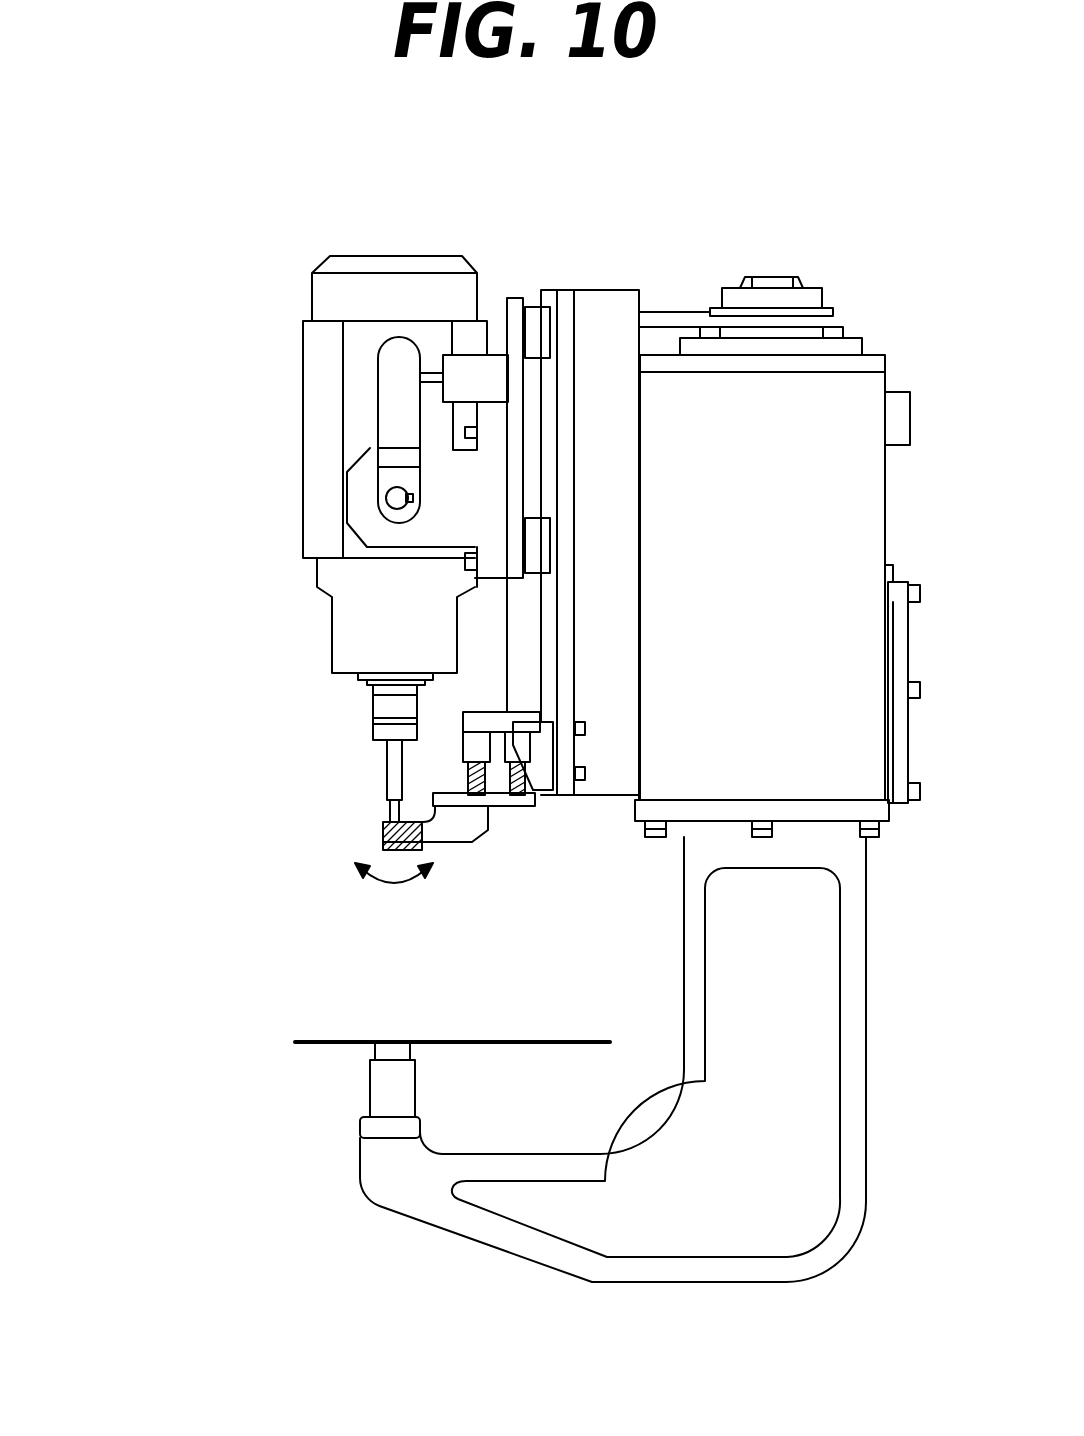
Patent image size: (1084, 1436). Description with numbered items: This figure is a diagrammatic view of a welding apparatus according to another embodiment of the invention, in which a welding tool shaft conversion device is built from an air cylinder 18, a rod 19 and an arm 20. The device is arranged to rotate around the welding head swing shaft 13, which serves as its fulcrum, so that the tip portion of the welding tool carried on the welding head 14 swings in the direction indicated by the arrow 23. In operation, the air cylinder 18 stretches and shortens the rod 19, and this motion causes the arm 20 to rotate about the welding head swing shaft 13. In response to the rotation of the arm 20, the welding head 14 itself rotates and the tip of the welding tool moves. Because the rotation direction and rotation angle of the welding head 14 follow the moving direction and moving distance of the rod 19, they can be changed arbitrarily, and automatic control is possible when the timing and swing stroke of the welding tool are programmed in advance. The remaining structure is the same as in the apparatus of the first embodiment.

The welding head swing shaft 13 is at (386, 499).
The welding head 14 is at (165, 240).
The air cylinder 18 is at (485, 367).
The rod 19 is at (428, 377).
The arm 20 is at (395, 407).
The arrow 23 is at (394, 884).